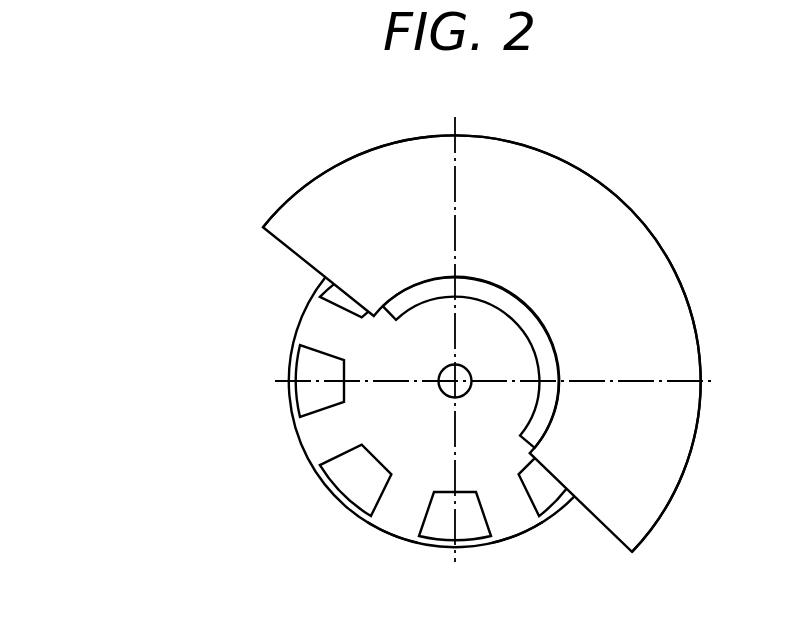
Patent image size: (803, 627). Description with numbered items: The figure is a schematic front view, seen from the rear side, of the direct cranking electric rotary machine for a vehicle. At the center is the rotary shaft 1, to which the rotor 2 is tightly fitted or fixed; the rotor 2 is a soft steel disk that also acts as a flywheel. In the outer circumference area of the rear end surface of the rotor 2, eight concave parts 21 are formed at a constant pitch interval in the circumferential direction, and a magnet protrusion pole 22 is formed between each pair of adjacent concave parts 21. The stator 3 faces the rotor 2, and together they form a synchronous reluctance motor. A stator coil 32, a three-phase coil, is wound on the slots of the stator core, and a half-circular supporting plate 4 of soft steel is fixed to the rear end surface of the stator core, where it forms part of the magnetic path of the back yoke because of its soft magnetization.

The rotary shaft 1 is at (447, 396).
The rotor 2 is at (373, 443).
The concave part 21 is at (352, 480).
The magnet protrusion pole 22 is at (400, 503).
The stator 3 is at (456, 320).
The stator coil 32 is at (403, 302).
The supporting plate 4 is at (362, 163).